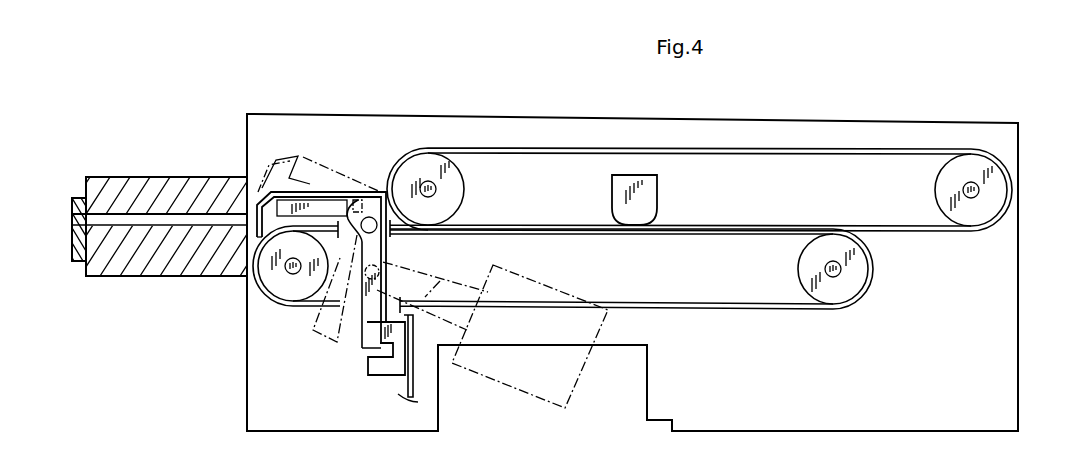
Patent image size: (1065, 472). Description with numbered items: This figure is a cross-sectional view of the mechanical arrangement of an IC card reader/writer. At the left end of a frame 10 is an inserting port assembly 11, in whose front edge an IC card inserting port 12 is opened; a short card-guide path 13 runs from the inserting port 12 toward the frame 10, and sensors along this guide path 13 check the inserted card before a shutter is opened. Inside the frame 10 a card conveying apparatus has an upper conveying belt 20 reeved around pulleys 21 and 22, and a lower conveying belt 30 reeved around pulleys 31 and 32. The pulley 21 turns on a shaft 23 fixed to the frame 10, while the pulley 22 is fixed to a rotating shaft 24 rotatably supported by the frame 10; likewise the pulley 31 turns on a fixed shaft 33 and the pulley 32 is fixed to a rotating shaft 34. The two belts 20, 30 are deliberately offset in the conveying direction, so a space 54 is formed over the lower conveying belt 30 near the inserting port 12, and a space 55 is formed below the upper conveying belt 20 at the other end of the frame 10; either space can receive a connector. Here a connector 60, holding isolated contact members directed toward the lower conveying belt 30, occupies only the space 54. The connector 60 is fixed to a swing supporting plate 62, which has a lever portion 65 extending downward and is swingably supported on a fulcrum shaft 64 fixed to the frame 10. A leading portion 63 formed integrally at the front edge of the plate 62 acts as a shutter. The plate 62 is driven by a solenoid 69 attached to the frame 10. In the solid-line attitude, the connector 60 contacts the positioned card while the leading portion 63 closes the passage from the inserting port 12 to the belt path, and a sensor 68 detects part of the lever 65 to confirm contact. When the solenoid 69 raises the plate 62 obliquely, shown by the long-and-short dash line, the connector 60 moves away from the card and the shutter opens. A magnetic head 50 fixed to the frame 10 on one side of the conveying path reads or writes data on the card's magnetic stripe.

The frame 10 is at (1019, 191).
The inserting port assembly 11 is at (154, 182).
The IC card inserting port 12 is at (79, 218).
The card-guide path 13 is at (212, 222).
The upper conveying belt 20 is at (780, 223).
The pulley 21 is at (940, 185).
The pulley 22 is at (441, 165).
The shaft 23 is at (975, 199).
The rotating shaft 24 is at (437, 188).
The lower conveying belt 30 is at (712, 234).
The pulley 31 is at (297, 292).
The pulley 32 is at (863, 279).
The shaft 33 is at (290, 269).
The rotating shaft 34 is at (825, 269).
The magnetic head 50 is at (652, 200).
The space 54 is at (358, 184).
The space 55 is at (928, 272).
The connector 60 is at (308, 201).
The swing supporting plate 62 is at (262, 186).
The leading portion 63 is at (256, 205).
The fulcrum shaft 64 is at (380, 234).
The lever portion 65 is at (365, 316).
The sensor 68 is at (391, 372).
The solenoid 69 is at (512, 392).